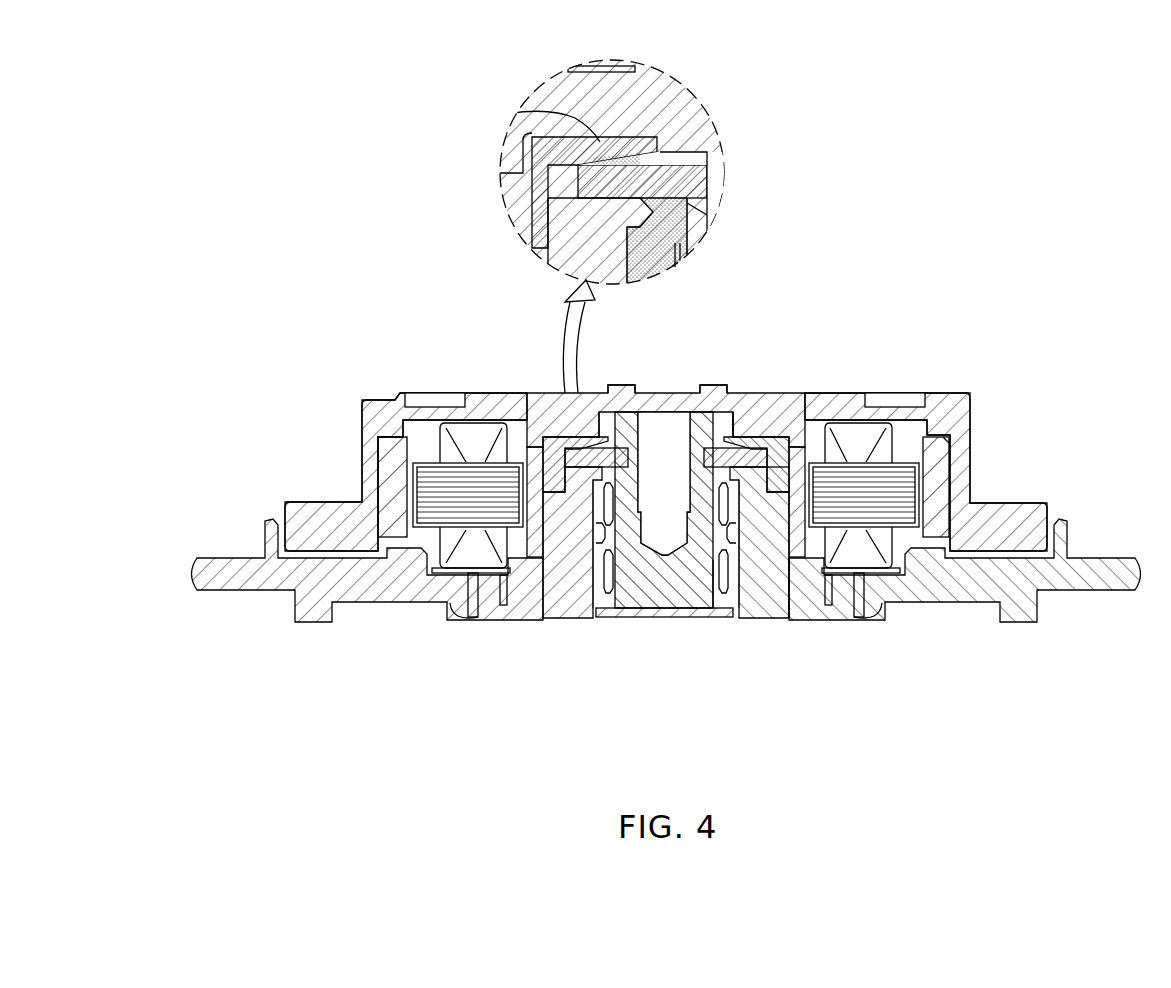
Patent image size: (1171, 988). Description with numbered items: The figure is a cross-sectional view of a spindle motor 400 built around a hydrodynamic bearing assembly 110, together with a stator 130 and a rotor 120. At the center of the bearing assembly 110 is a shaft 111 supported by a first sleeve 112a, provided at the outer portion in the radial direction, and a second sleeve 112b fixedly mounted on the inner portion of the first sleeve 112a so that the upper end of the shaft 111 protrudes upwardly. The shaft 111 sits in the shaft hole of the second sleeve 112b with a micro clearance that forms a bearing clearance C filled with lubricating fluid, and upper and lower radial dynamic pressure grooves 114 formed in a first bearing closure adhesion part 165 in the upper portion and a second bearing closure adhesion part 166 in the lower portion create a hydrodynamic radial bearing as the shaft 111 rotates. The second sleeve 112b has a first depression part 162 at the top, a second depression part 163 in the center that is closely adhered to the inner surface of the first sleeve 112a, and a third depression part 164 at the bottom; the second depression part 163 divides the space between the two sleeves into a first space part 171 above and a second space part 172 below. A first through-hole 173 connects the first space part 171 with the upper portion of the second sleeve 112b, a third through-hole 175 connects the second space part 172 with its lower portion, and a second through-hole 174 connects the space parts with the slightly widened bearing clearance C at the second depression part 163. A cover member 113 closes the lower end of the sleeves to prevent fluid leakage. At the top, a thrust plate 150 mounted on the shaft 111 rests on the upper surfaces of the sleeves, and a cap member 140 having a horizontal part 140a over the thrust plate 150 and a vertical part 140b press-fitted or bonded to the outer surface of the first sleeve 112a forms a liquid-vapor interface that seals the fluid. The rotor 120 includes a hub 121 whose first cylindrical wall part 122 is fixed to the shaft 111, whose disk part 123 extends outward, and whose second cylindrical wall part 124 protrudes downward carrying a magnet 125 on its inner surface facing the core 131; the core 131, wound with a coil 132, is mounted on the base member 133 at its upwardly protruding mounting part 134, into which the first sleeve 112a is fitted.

The spindle motor 400 is at (218, 107).
The hydrodynamic bearing assembly 110 is at (666, 486).
The shaft 111 is at (718, 188).
The first sleeve 112a is at (563, 610).
The second sleeve 112b is at (583, 605).
The cover member 113 is at (657, 618).
The radial dynamic pressure groove 114 is at (688, 258).
The rotor 120 is at (691, 402).
The hub 121 is at (691, 402).
The first cylindrical wall part 122 is at (572, 415).
The disk part 123 is at (528, 312).
The second cylindrical wall part 124 is at (365, 467).
The magnet 125 is at (943, 460).
The stator 130 is at (623, 592).
The core 131 is at (423, 517).
The coil 132 is at (457, 557).
The base member 133 is at (520, 597).
The mounting part 134 is at (787, 600).
The cap member 140 is at (566, 291).
The horizontal part 140a is at (597, 126).
The vertical part 140b is at (540, 212).
The thrust plate 150 is at (680, 166).
The first depression part 162 is at (708, 400).
The second depression part 163 is at (757, 600).
The third depression part 164 is at (737, 600).
The first bearing closure adhesion part 165 is at (712, 206).
The second bearing closure adhesion part 166 is at (738, 590).
The first space part 171 is at (800, 420).
The second space part 172 is at (760, 617).
The first through-hole 173 is at (683, 420).
The second through-hole 174 is at (722, 550).
The third through-hole 175 is at (713, 600).
The bearing clearance C is at (695, 240).